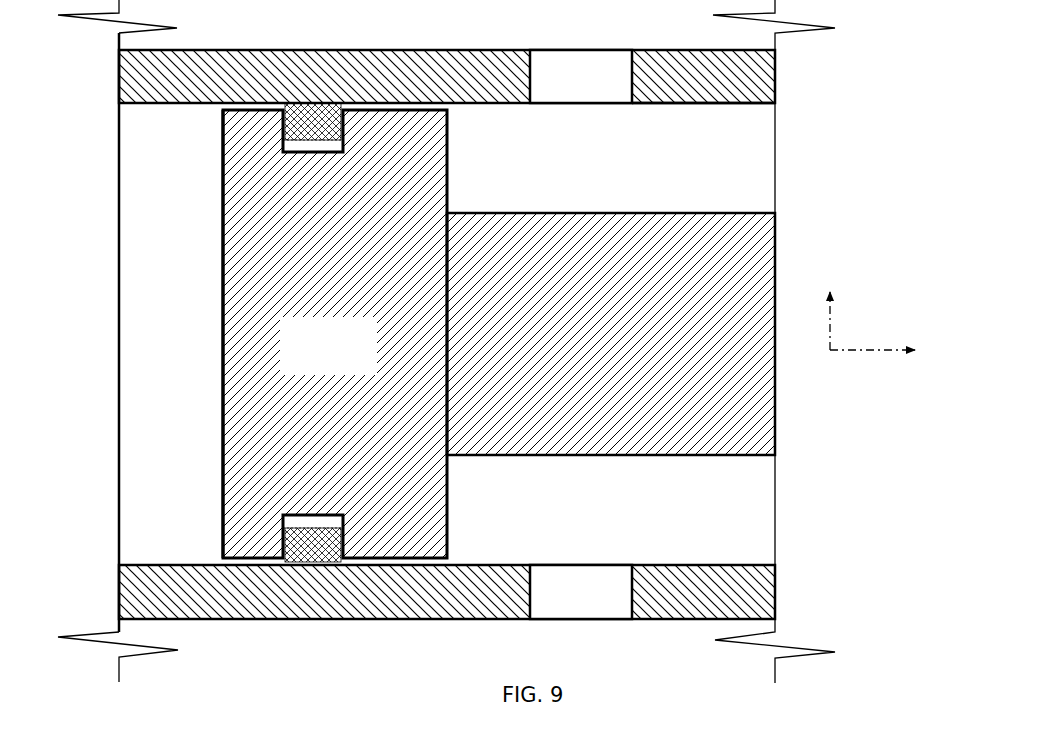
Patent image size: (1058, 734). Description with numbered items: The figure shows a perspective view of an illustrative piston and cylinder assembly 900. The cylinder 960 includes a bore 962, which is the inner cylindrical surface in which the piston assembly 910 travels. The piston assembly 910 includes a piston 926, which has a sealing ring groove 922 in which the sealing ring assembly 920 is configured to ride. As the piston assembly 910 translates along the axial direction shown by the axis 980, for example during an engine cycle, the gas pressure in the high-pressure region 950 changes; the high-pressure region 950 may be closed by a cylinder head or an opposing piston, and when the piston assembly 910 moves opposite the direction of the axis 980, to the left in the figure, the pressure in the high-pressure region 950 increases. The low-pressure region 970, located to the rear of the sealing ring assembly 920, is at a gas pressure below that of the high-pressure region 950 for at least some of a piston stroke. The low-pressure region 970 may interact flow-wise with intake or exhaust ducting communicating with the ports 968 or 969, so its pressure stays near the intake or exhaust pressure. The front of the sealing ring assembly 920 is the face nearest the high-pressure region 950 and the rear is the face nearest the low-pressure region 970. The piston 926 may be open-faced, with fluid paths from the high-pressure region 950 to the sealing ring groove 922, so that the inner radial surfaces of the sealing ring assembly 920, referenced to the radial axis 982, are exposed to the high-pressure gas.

The piston and cylinder assembly 900 is at (680, 38).
The piston assembly 910 is at (305, 358).
The sealing ring assembly 920 is at (230, 130).
The sealing ring groove 922 is at (278, 514).
The piston 926 is at (222, 210).
The high-pressure region 950 is at (137, 285).
The cylinder 960 is at (160, 86).
The bore 962 is at (741, 107).
The port 968 is at (560, 86).
The port 969 is at (560, 603).
The low-pressure region 970 is at (595, 165).
The axis 980 is at (896, 351).
The axis 982 is at (832, 305).